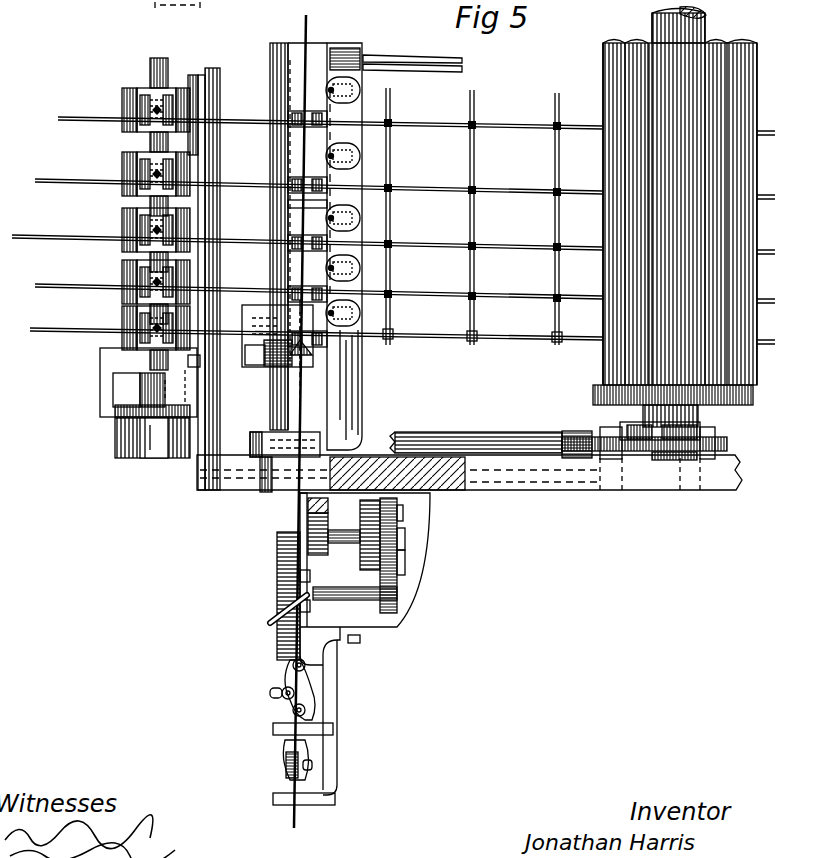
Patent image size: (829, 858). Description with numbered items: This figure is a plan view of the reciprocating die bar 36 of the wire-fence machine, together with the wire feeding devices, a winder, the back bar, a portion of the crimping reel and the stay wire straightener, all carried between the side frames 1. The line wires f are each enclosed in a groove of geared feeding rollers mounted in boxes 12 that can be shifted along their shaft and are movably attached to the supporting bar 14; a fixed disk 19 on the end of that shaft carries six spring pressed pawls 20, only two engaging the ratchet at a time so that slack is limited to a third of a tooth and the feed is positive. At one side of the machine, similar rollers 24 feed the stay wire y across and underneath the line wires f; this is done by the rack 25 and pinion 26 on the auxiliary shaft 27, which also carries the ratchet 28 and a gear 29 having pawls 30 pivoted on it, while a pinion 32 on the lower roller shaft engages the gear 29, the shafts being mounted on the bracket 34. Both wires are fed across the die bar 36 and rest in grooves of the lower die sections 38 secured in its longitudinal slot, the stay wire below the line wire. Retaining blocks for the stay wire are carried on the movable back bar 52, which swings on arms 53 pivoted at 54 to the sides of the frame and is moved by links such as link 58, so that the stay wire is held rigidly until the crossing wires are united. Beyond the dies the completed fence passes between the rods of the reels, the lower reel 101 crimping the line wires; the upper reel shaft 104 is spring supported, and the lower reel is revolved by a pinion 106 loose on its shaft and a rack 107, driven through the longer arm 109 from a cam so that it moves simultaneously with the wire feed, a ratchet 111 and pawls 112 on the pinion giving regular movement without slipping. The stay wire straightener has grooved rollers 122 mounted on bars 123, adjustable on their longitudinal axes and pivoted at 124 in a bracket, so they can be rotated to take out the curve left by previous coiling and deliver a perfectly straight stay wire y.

The side frame 1 is at (545, 490).
The roller box 12 is at (122, 312).
The supporting bar 14 is at (208, 387).
The fixed disk 19 is at (148, 460).
The spring pressed pawl 20 is at (130, 420).
The feeding roller 24 is at (280, 588).
The rack 25 is at (329, 508).
The pinion 26 is at (320, 548).
The auxiliary shaft 27 is at (405, 534).
The ratchet 28 is at (368, 552).
The gear 29 is at (400, 560).
The pawl 30 is at (400, 522).
The pinion 32 is at (390, 612).
The bracket 34 is at (285, 298).
The die bar 36 is at (292, 148).
The lower die section 38 is at (290, 198).
The back bar 52 is at (340, 374).
The arm 53 is at (288, 440).
The pivot 54 is at (262, 496).
The link 58 is at (410, 56).
The lower reel 101 is at (625, 344).
The shaft 104 is at (698, 32).
The pinion 106 is at (690, 460).
The rack 107 is at (727, 446).
The arm 109 is at (486, 440).
The ratchet 111 is at (643, 417).
The pawl 112 is at (700, 424).
The roller 122 is at (287, 763).
The bar 123 is at (318, 748).
The pivot 124 is at (305, 806).
The line wire f is at (56, 330).
The rods J is at (560, 298).
The stay wire y is at (294, 514).